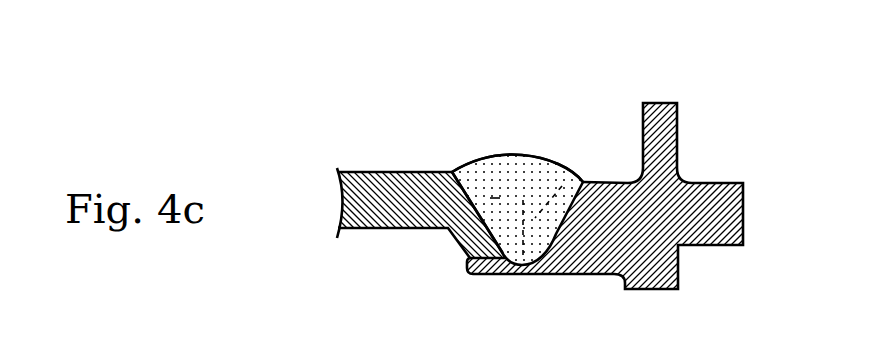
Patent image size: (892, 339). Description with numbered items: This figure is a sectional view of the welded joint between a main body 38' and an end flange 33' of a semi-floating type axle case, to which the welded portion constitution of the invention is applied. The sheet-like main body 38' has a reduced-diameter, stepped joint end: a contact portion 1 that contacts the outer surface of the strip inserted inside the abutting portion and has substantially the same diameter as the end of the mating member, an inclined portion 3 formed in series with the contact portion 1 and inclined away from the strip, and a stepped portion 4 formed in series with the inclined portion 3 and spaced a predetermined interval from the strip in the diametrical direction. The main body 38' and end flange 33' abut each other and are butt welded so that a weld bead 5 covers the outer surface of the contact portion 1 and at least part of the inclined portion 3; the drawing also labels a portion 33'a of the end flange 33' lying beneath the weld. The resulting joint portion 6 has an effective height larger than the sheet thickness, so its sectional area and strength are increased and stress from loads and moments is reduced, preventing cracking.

The main body 38' is at (408, 173).
The stepped portion 4 is at (410, 178).
The inclined portion 3 is at (481, 186).
The contact portion 1 is at (513, 212).
The joint portion 6 is at (513, 108).
The weld bead 5 is at (547, 160).
The end flange 33' is at (625, 169).
The flange portion of second member 33'a is at (522, 298).